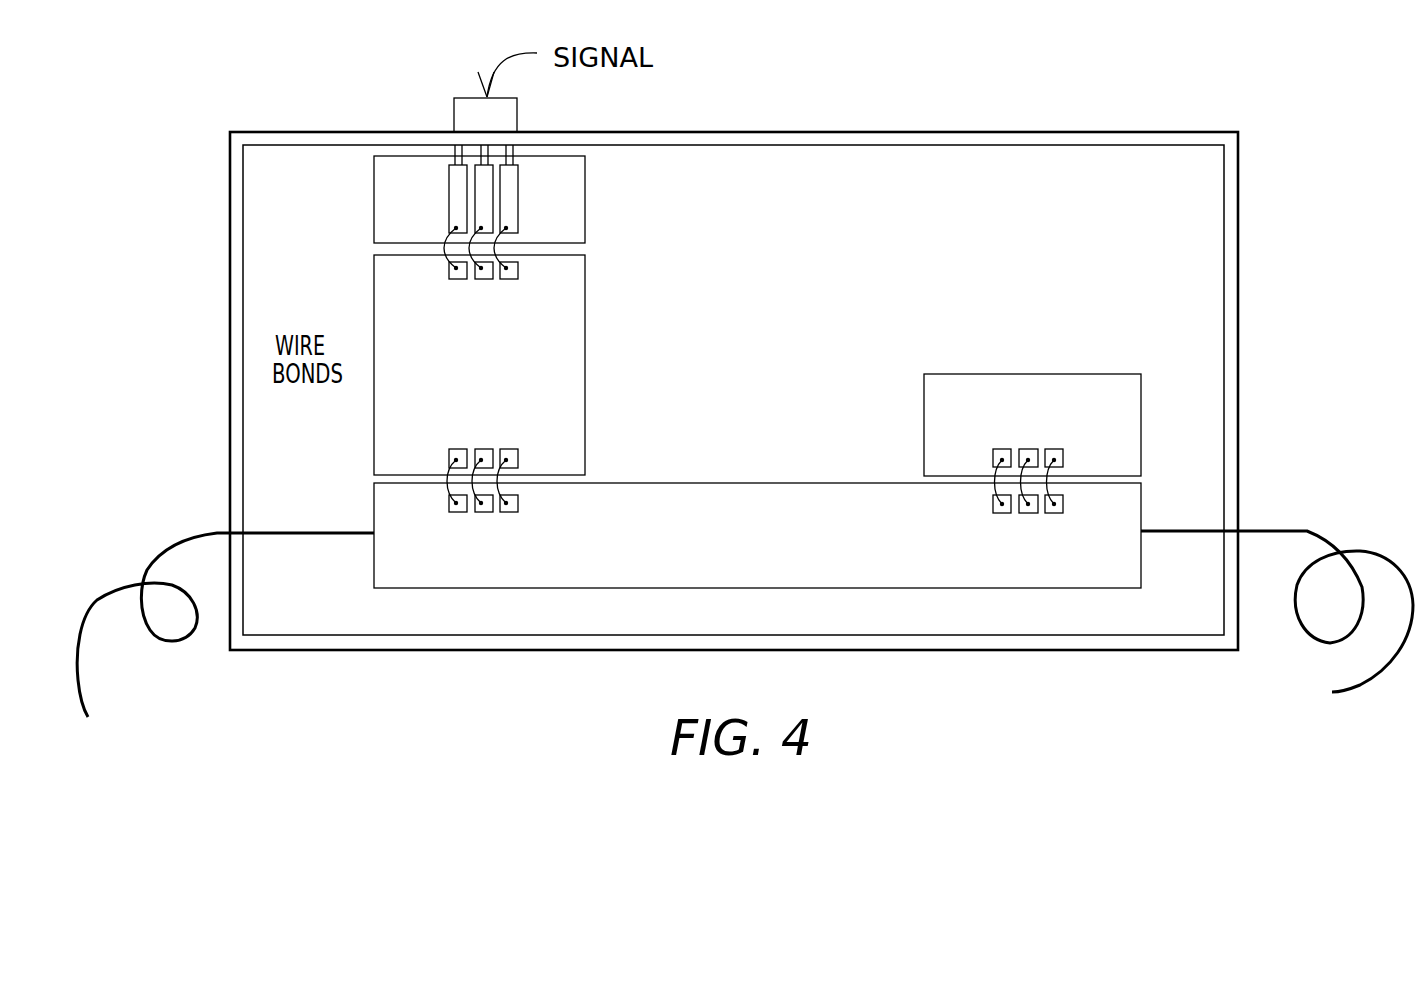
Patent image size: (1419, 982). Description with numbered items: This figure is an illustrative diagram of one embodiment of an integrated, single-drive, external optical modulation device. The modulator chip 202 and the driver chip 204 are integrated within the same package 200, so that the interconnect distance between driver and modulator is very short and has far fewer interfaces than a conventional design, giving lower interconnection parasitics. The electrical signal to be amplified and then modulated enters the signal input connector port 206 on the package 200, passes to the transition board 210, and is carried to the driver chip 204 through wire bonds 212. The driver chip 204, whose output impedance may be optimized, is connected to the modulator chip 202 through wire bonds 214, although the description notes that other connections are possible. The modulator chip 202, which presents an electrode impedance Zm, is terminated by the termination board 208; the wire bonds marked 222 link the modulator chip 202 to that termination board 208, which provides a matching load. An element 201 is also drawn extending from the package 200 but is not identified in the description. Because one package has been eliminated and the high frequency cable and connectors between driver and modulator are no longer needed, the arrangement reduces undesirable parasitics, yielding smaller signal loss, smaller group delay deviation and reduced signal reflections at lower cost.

The optical modulation device package 200 is at (808, 131).
The electrode wire 201 is at (175, 542).
The modulator chip 202 is at (797, 482).
The driver chip 204 is at (585, 338).
The signal input connector port 206 is at (454, 113).
The termination board 208 is at (1043, 375).
The transition board 210 is at (585, 197).
The wire bonds 212 is at (449, 258).
The wire bonds 214 is at (449, 470).
The impedance Zd 222 is at (1063, 470).